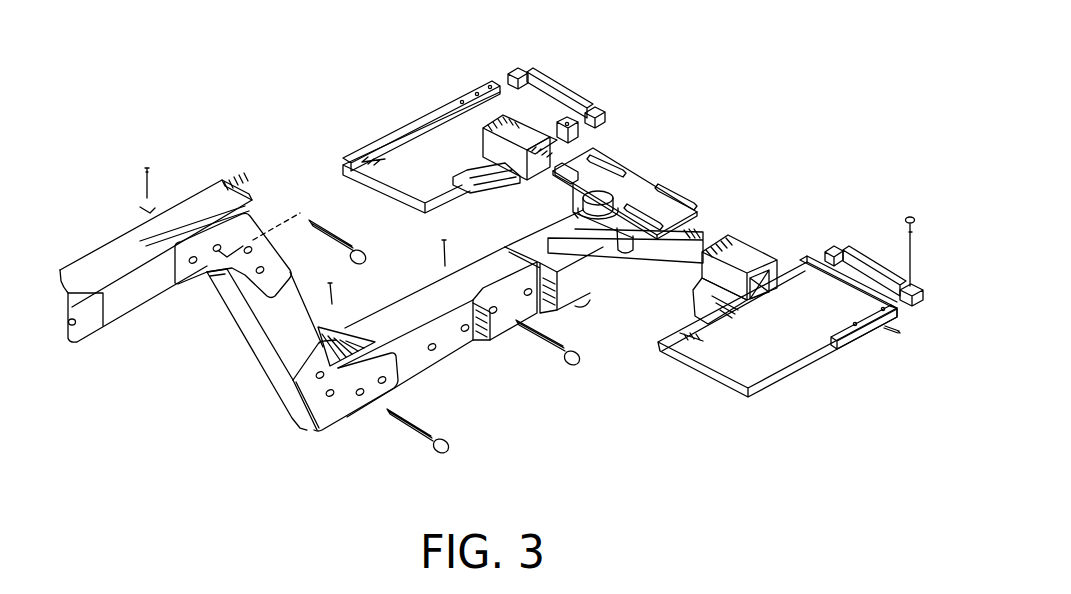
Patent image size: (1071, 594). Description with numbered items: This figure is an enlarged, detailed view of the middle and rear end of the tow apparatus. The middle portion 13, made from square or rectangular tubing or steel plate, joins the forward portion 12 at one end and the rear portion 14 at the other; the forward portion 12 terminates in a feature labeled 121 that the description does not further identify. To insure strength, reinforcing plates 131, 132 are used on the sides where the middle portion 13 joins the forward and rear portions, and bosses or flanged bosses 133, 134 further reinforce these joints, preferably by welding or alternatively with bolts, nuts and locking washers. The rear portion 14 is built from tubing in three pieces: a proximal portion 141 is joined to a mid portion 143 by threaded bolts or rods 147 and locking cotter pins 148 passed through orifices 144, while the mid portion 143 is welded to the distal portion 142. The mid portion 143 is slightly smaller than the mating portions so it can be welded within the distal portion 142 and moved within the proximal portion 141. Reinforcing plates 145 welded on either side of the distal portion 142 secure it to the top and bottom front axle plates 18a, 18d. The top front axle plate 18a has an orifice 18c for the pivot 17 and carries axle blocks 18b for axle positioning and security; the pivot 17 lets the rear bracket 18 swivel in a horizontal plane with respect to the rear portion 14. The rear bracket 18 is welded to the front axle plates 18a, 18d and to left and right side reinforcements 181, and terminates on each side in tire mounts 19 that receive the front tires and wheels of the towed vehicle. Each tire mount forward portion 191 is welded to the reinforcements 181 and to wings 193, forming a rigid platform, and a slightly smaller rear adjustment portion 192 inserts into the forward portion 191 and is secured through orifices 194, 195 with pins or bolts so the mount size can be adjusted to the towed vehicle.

The forward portion 12 is at (237, 182).
The beam end opening 121 is at (90, 325).
The middle portion 13 is at (270, 333).
The reinforcing plate 131 is at (337, 420).
The reinforcing plate 132 is at (253, 227).
The flanged boss 133 is at (340, 327).
The flanged boss 134 is at (213, 284).
The rear portion 14 is at (483, 341).
The proximal portion 141 is at (473, 345).
The distal portion 142 is at (543, 240).
The mid portion 143 is at (473, 278).
The orifices 144 is at (495, 314).
The reinforcing plates 145 is at (568, 301).
The threaded bolts or rods 147 is at (336, 222).
The locking cotter pins 148 is at (150, 178).
The pivot 17 is at (603, 196).
The rear bracket 18 is at (648, 215).
The top front axle plate 18a is at (661, 183).
The axle blocks 18b is at (683, 193).
The orifice 18c is at (625, 238).
The bottom front axle plate 18d is at (630, 248).
The side reinforcements 181 is at (760, 255).
The tire mounts 19 is at (623, 230).
The tire mount forward portion 191 is at (367, 150).
The rear adjustment portion 192 is at (567, 80).
The wings 193 is at (467, 175).
The orifices 194 is at (513, 70).
The orifices 195 is at (462, 100).